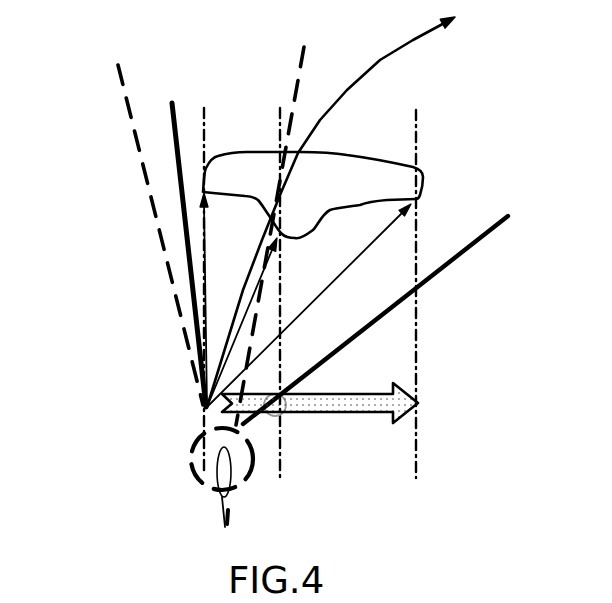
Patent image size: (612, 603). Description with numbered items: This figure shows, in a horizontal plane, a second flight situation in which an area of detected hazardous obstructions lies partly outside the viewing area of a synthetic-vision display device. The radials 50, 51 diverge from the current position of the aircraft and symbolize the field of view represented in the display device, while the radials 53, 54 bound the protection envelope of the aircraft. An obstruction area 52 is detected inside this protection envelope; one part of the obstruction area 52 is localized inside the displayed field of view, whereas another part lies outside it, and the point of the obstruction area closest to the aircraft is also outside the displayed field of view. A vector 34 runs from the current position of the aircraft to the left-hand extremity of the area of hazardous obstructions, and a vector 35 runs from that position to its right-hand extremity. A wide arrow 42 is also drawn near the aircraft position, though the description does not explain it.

The vector 34 is at (207, 261).
The vector 35 is at (333, 302).
The translation direction arrow 42 is at (408, 400).
The radial 50 is at (303, 52).
The radial 51 is at (127, 100).
The obstruction area 52 is at (420, 175).
The radial 53 is at (177, 101).
The radial 54 is at (508, 216).